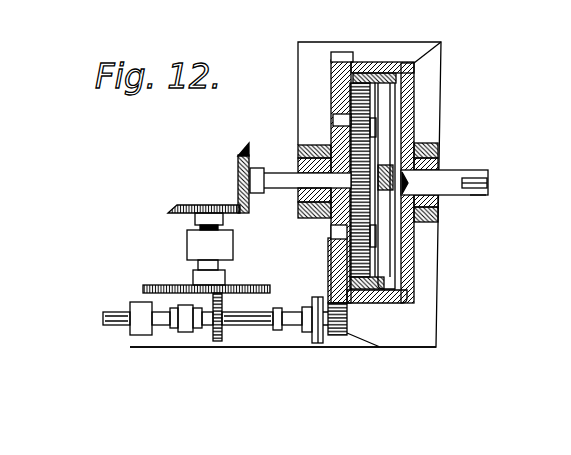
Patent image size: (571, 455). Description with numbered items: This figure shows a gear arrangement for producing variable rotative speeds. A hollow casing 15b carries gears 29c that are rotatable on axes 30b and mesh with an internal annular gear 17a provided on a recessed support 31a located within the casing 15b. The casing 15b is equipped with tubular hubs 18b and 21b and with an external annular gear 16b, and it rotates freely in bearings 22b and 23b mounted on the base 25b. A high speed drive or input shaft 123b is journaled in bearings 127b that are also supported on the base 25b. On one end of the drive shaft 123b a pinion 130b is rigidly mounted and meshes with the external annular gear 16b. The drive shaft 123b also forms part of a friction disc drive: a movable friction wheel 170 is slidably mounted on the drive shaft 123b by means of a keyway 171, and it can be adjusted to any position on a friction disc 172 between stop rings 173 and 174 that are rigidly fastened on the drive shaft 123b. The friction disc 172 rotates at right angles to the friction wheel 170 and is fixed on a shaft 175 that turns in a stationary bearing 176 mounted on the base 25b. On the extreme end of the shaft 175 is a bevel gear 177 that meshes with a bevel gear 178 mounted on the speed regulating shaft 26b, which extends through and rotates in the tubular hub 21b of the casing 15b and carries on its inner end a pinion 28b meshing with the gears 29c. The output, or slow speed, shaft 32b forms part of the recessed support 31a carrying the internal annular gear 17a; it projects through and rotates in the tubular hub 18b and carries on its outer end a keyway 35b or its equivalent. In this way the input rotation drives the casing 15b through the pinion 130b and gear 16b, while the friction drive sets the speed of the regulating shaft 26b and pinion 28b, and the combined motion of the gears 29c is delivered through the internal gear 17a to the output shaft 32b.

The hollow casing 15b is at (442, 43).
The external annular gear 16b is at (355, 53).
The internal annular gear 17a is at (374, 297).
The tubular hub 18b is at (438, 165).
The tubular hub 21b is at (292, 170).
The bearing 22b is at (438, 152).
The bearing 23b is at (336, 113).
The base 25b is at (436, 297).
The speed regulating shaft 26b is at (278, 190).
The pinion 28b is at (417, 225).
The gears 29c is at (328, 260).
The axes 30b is at (355, 88).
The recessed support 31a is at (390, 105).
The output shaft 32b is at (477, 195).
The keyway 35b is at (485, 183).
The drive shaft 123b is at (115, 327).
The bearings 127b is at (330, 335).
The pinion 130b is at (382, 345).
The friction wheel 170 is at (215, 343).
The keyway 171 is at (263, 333).
The friction disc 172 is at (255, 277).
The stop ring 173 is at (173, 330).
The stop ring 174 is at (275, 318).
The shaft 175 is at (203, 235).
The stationary bearing 176 is at (200, 231).
The bevel gear 177 is at (193, 205).
The bevel gear 178 is at (238, 150).